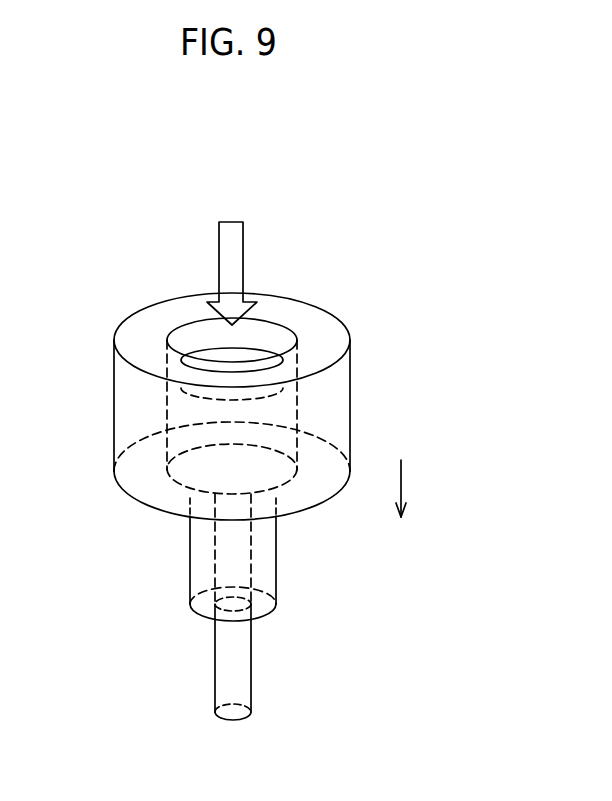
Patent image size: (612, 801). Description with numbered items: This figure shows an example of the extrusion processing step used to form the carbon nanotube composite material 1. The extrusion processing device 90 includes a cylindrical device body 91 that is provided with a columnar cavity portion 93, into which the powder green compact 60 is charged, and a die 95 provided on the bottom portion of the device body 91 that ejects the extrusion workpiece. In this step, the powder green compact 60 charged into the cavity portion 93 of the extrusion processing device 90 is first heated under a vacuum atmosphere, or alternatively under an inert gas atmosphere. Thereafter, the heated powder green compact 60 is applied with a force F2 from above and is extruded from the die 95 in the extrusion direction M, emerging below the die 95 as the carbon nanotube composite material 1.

The carbon nanotube composite material 1 is at (253, 662).
The powder green compact 60 is at (247, 358).
The extrusion processing device 90 is at (381, 371).
The device body 91 is at (113, 413).
The cavity portion 93 is at (182, 333).
The die 95 is at (200, 620).
The force F2 is at (243, 237).
The extrusion direction M is at (412, 488).